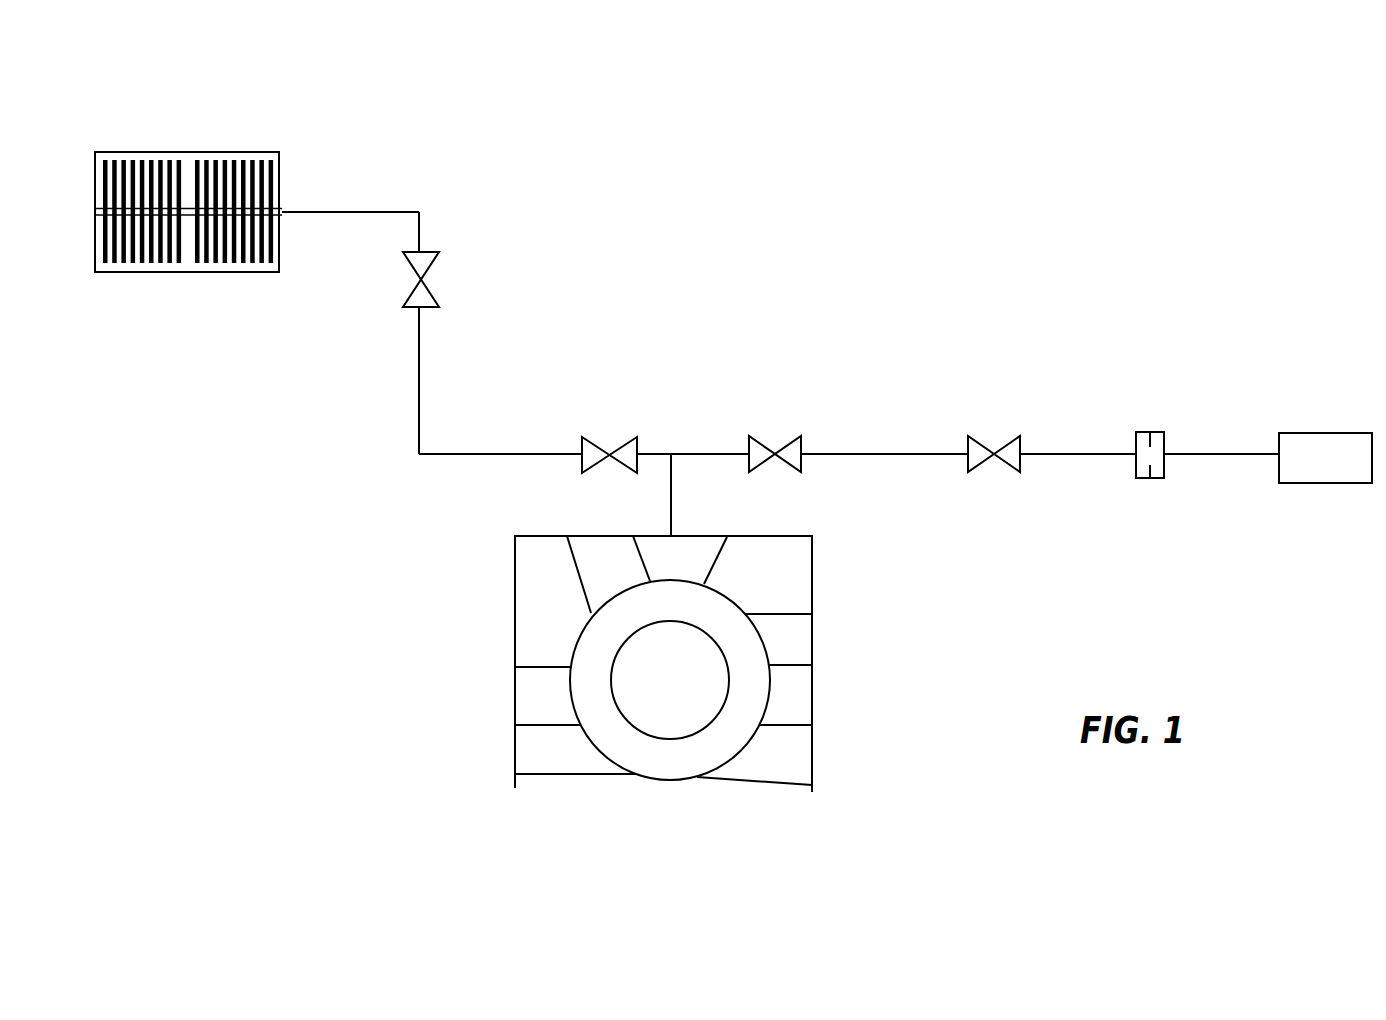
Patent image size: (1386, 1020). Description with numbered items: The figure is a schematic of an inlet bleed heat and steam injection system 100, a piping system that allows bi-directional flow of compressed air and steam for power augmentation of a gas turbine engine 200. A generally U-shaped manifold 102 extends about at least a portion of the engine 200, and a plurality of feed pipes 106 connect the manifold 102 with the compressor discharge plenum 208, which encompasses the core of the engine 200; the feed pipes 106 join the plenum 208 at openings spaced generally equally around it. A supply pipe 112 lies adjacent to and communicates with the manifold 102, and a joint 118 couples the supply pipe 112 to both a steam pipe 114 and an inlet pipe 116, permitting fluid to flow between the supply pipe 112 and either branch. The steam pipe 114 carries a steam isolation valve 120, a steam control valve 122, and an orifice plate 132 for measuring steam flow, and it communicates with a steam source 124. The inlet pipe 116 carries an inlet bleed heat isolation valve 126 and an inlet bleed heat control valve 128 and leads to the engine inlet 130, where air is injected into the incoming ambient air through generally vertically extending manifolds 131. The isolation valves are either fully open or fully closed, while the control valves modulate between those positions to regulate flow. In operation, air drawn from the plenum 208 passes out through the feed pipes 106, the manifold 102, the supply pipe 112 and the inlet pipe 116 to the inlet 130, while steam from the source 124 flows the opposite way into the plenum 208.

The inlet bleed heat and steam injection system 100 is at (933, 265).
The manifold 102 is at (812, 573).
The feed pipes 106 is at (720, 558).
The supply pipe 112 is at (670, 501).
The steam pipe 114 is at (884, 453).
The inlet pipe 116 is at (493, 452).
The joint 118 is at (670, 452).
The steam isolation valve 120 is at (768, 445).
The steam control valve 122 is at (983, 447).
The steam source 124 is at (1316, 433).
The inlet bleed heat isolation valve 126 is at (600, 448).
The inlet bleed heat control valve 128 is at (432, 250).
The engine inlet 130 is at (228, 152).
The vertically extending manifolds 131 is at (160, 163).
The orifice plate 132 is at (1149, 432).
The gas turbine engine 200 is at (692, 694).
The compressor discharge plenum 208 is at (658, 757).